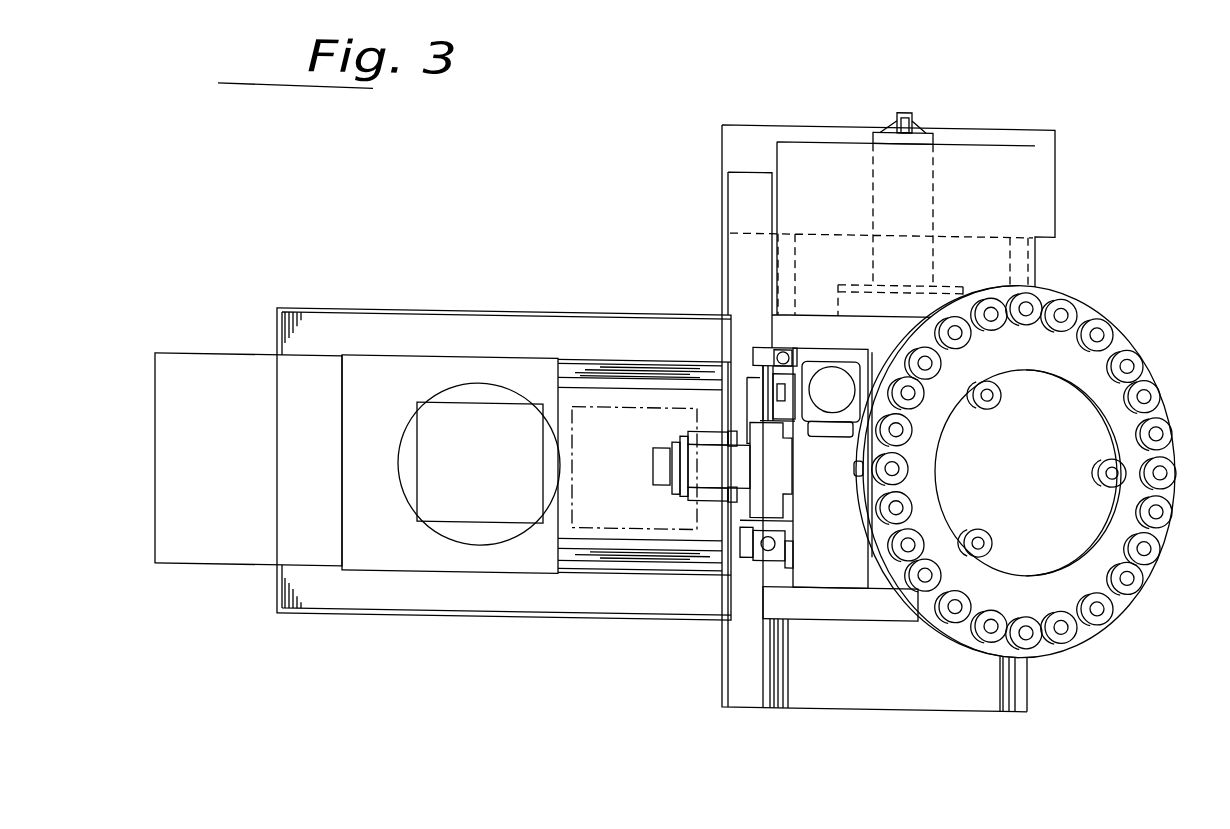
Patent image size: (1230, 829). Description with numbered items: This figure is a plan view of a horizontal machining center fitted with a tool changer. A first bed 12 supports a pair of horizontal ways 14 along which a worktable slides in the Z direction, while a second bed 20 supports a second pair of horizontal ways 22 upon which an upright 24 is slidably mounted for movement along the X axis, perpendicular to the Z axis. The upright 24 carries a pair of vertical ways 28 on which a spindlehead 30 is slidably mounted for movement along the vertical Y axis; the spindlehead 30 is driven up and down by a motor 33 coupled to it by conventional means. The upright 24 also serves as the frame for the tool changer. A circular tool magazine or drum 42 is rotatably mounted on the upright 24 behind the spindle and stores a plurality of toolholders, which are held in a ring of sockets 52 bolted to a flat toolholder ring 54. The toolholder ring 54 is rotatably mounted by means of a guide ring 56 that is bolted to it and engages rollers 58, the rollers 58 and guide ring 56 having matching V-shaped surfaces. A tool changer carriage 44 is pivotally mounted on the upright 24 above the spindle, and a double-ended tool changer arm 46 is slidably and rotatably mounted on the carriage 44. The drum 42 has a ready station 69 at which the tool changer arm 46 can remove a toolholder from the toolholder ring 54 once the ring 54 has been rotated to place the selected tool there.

The first bed 12 is at (580, 624).
The horizontal ways 14 is at (623, 374).
The second bed 20 is at (875, 693).
The second pair of horizontal ways 22 is at (780, 656).
The upright 24 is at (900, 620).
The vertical ways 28 is at (773, 541).
The spindlehead 30 is at (748, 408).
The motor 33 is at (833, 375).
The tool magazine or drum 42 is at (1137, 318).
The tool changer carriage 44 is at (725, 472).
The tool changer arm 46 is at (660, 468).
The sockets 52 is at (1068, 302).
The toolholder ring 54 is at (1113, 416).
The guide ring 56 is at (1170, 503).
The rollers 58 is at (998, 393).
The ready station 69 is at (846, 465).